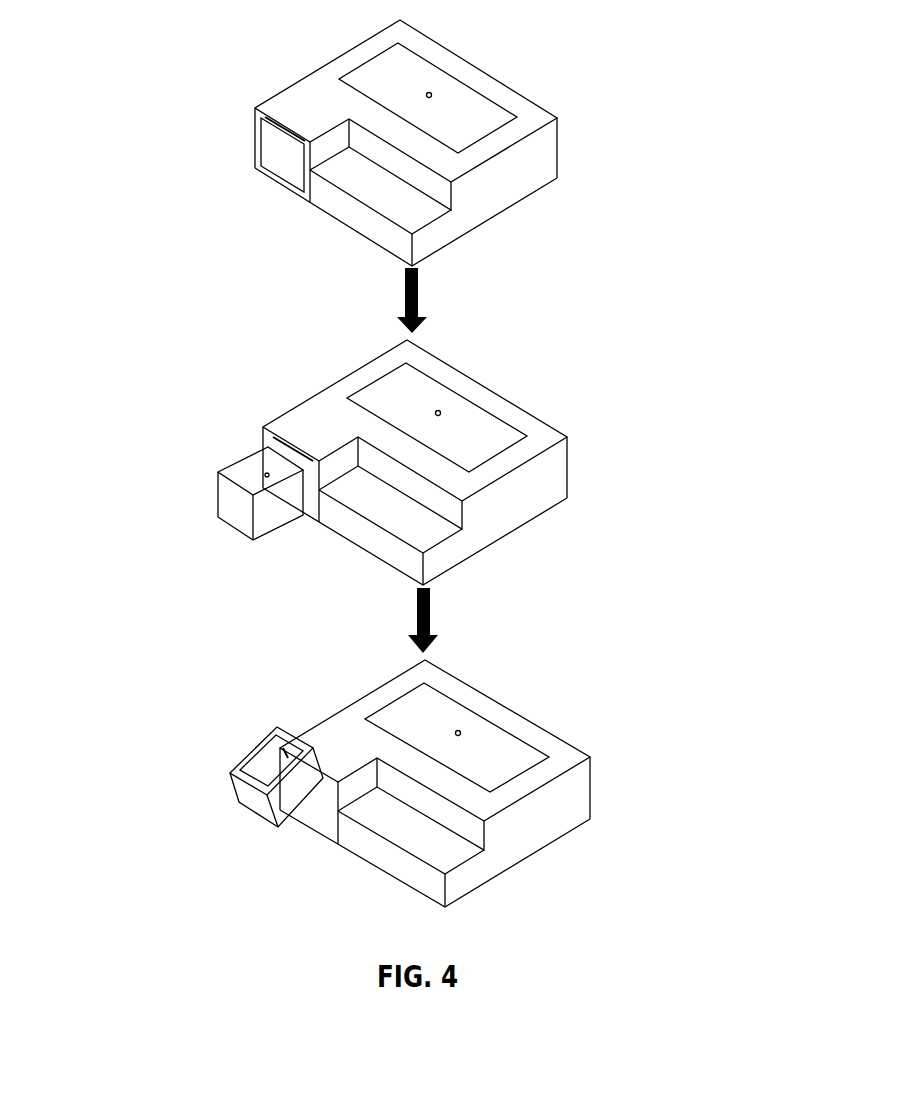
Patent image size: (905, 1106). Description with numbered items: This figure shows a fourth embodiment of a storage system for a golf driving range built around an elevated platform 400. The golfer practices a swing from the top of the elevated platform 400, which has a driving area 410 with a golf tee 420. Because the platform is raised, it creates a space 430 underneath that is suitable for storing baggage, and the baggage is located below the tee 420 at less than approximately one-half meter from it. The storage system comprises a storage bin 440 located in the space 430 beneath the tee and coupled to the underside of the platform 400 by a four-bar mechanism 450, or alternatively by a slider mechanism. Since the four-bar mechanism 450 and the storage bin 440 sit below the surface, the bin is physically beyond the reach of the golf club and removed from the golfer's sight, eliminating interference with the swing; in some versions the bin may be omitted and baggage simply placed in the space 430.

The elevated platform 400 is at (401, 143).
The driving area 410 is at (398, 88).
The golf tee 420 is at (426, 98).
The space 430 is at (306, 826).
The storage bin 440 is at (292, 147).
The four-bar mechanism 450 is at (290, 444).